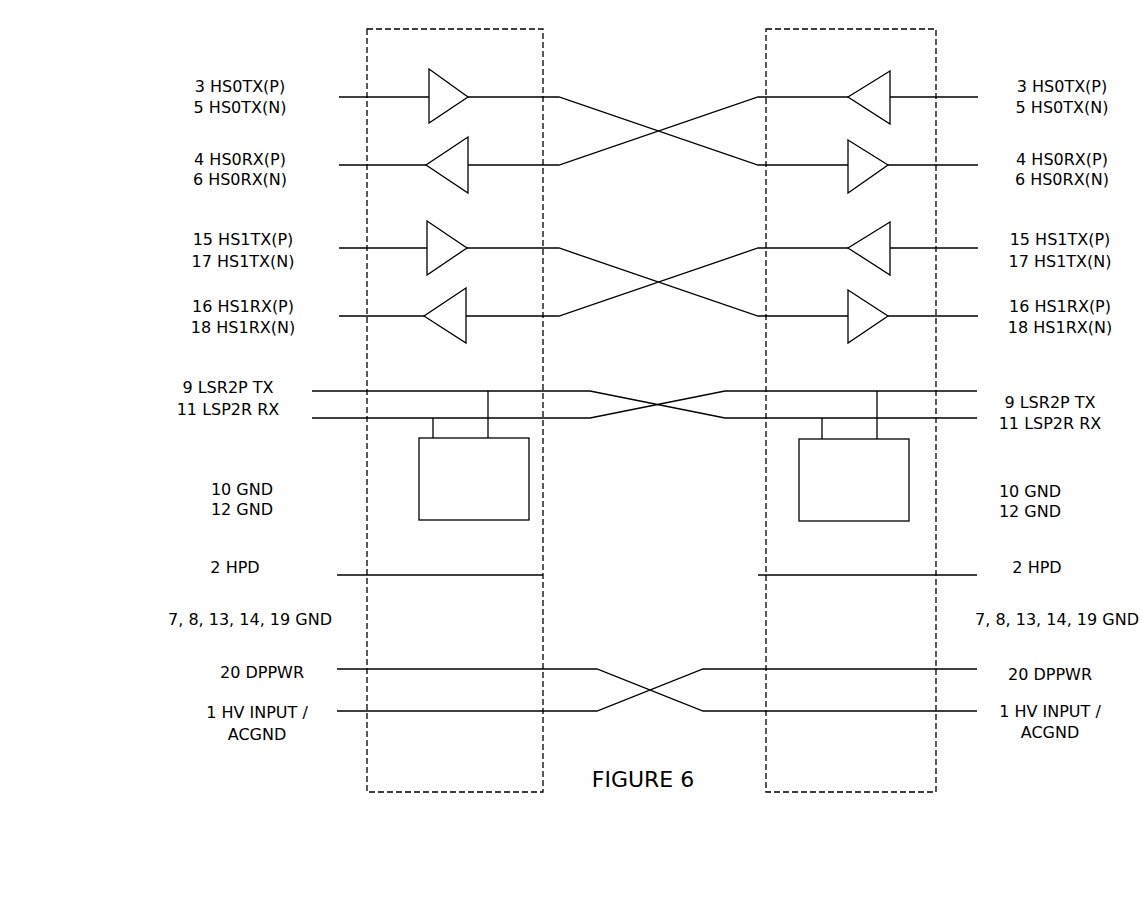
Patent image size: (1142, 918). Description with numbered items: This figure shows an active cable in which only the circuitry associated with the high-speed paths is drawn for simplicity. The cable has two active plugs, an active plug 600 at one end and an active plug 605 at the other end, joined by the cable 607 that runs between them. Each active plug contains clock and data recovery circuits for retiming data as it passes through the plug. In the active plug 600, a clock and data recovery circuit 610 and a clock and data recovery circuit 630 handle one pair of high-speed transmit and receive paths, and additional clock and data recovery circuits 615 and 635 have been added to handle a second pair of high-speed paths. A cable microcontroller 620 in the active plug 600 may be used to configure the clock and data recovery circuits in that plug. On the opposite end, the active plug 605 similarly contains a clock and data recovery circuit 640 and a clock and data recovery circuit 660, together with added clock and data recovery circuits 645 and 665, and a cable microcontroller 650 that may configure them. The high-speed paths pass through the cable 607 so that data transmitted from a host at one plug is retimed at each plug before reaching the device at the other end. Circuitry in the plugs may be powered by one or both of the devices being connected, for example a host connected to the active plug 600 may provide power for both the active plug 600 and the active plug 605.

The active plug 600 is at (455, 410).
The active plug 605 is at (851, 410).
The cable 607 is at (654, 426).
The clock and data recovery circuit 610 is at (470, 86).
The clock and data recovery circuit 615 is at (469, 237).
The cable microcontroller 620 is at (474, 455).
The clock and data recovery circuit 630 is at (469, 158).
The clock and data recovery circuit 635 is at (468, 309).
The clock and data recovery circuit 640 is at (846, 87).
The clock and data recovery circuit 645 is at (846, 238).
The cable microcontroller 650 is at (854, 456).
The clock and data recovery circuit 660 is at (845, 158).
The clock and data recovery circuit 665 is at (845, 309).